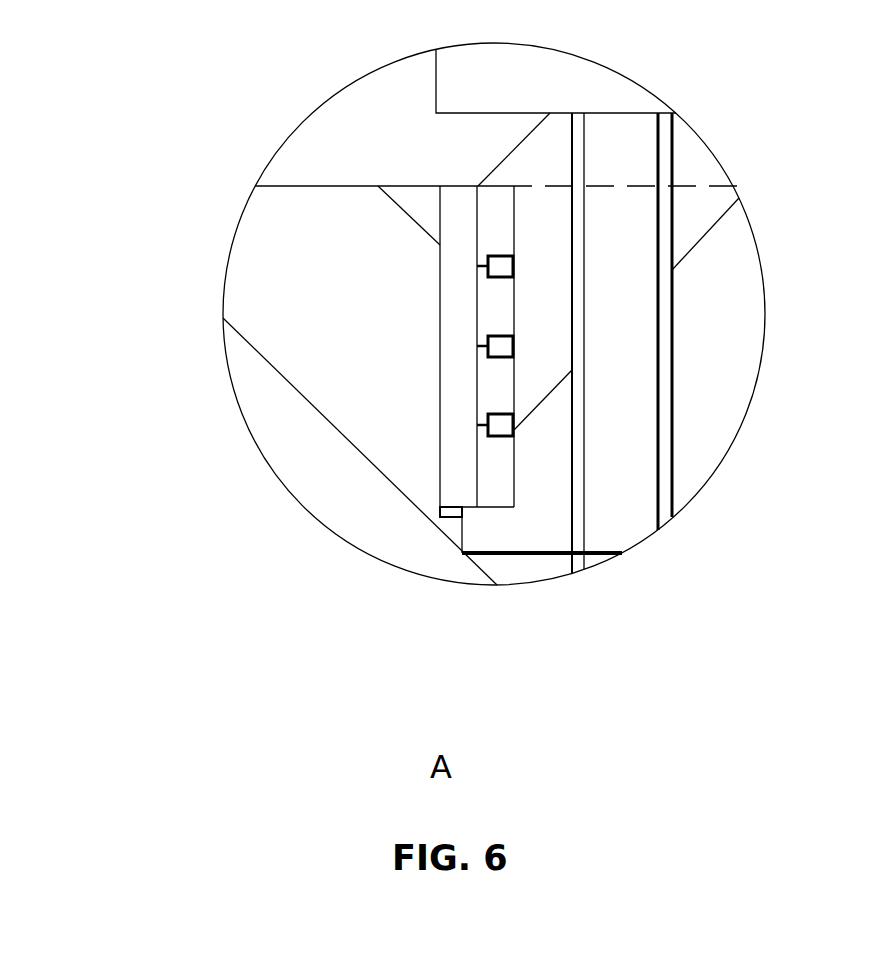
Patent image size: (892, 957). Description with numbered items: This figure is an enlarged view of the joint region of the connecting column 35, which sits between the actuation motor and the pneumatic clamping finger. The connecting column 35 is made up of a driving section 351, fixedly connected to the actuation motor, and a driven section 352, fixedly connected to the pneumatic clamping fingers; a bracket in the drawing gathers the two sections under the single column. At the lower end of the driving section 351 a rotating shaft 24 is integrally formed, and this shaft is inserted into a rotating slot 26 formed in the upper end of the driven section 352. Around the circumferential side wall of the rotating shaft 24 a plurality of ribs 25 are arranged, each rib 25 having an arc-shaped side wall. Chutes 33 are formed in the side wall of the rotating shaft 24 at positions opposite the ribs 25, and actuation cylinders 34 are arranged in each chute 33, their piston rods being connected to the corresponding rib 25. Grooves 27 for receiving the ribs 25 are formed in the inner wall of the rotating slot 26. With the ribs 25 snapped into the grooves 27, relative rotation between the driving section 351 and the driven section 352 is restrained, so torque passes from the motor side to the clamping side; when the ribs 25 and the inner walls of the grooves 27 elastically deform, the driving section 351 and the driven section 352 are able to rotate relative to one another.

The connecting column 35 is at (167, 112).
The driving section 351 is at (317, 162).
The driven section 352 is at (287, 238).
The actuation cylinders 34 is at (500, 272).
The chutes 33 is at (488, 375).
The ribs 25 is at (450, 462).
The grooves 27 is at (445, 512).
The rotating slot 26 is at (480, 557).
The rotating shaft 24 is at (543, 540).